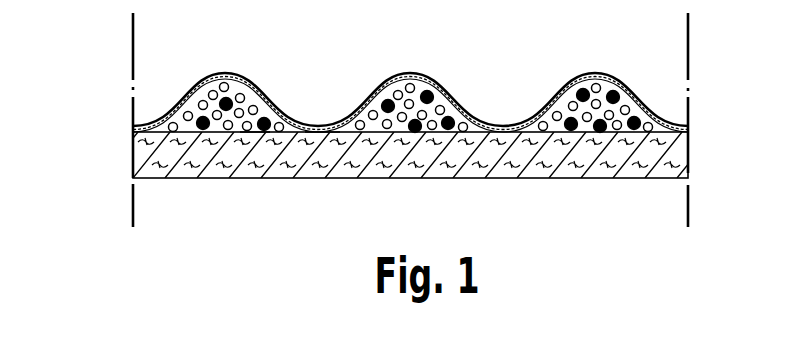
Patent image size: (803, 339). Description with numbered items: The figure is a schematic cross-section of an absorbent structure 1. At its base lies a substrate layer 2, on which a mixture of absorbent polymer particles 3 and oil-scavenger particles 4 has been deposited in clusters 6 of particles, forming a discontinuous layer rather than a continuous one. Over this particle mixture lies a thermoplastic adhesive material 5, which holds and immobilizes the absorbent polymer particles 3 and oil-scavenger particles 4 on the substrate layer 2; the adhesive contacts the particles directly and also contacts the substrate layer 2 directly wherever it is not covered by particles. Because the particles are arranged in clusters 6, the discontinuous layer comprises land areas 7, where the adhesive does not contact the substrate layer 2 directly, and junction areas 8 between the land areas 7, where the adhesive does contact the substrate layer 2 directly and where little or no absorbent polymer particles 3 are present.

The absorbent structure 1 is at (112, 148).
The substrate layer 2 is at (170, 157).
The absorbent polymer particles 3 is at (626, 105).
The oil-scavenger particles 4 is at (567, 95).
The thermoplastic adhesive material 5 is at (435, 78).
The clusters 6 is at (263, 93).
The land areas 7 is at (253, 134).
The junction areas 8 is at (322, 134).